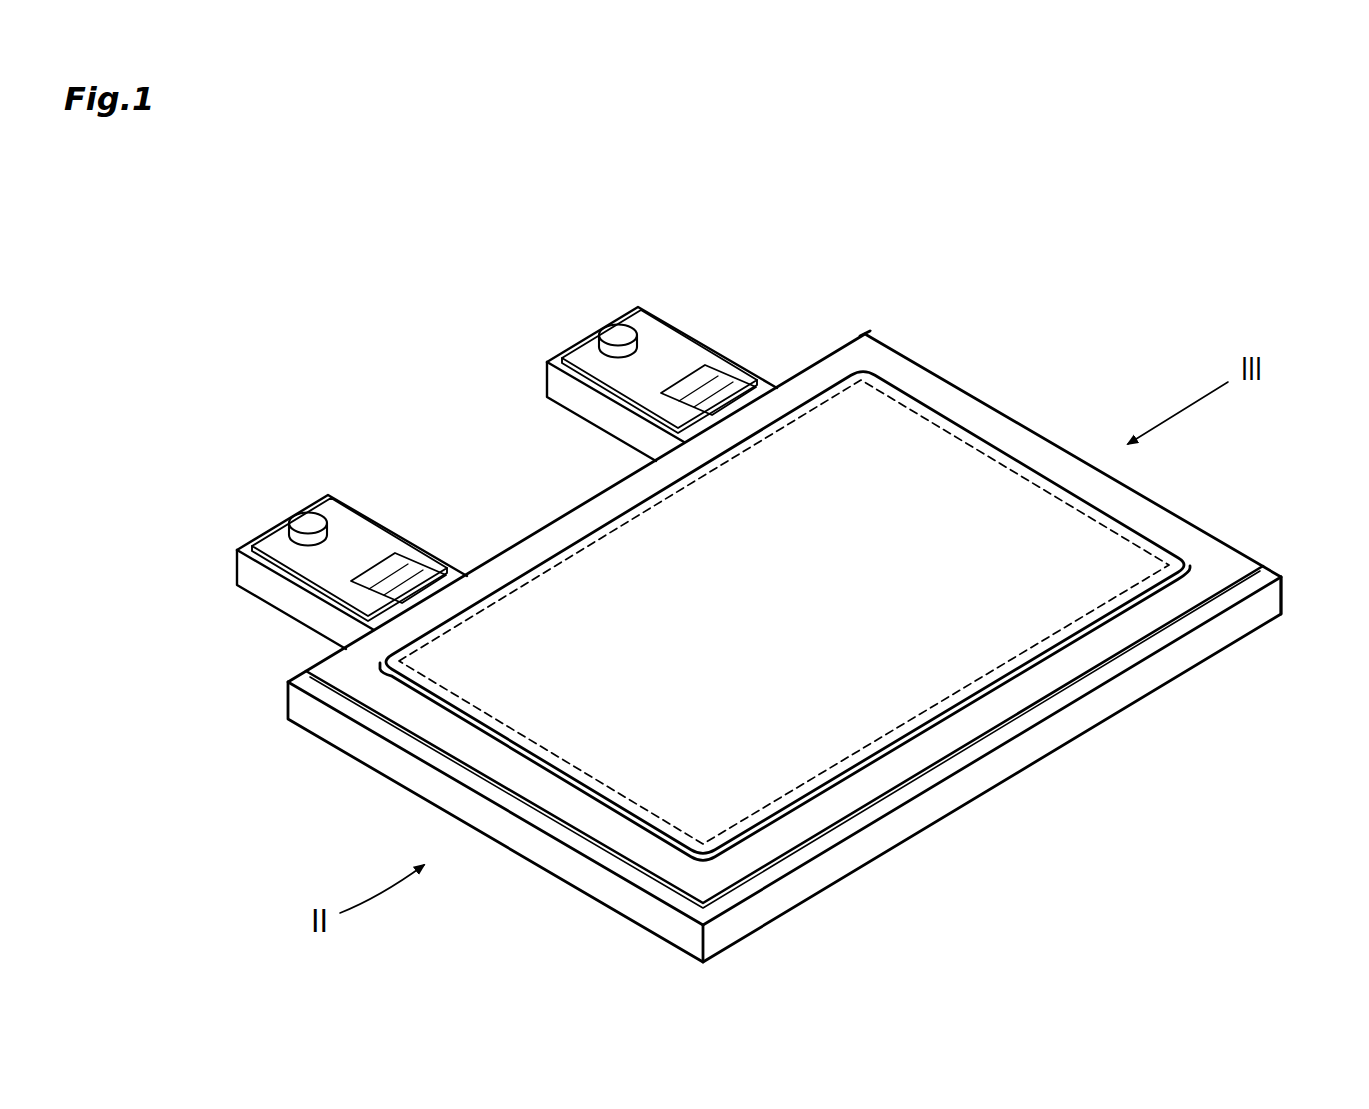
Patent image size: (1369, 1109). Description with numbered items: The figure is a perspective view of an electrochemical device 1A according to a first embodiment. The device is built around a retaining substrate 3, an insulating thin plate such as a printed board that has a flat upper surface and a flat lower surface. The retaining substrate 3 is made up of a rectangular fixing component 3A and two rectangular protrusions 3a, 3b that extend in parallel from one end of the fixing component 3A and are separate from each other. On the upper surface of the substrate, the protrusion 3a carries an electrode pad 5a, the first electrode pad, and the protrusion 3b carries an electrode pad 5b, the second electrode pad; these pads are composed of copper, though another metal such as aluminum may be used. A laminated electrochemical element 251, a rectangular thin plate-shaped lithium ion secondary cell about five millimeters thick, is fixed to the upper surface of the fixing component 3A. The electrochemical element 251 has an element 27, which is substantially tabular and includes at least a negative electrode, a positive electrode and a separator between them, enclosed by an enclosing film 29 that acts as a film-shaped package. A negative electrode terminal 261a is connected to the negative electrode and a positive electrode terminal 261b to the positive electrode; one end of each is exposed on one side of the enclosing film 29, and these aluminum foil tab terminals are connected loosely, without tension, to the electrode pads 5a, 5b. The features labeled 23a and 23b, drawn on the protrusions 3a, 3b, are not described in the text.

The electrochemical device 1A is at (898, 308).
The retaining substrate 3 is at (606, 486).
The fixing component 3A is at (1268, 580).
The protrusion 3a is at (336, 490).
The protrusion 3b is at (603, 312).
The electrode pad 5a is at (272, 548).
The electrode pad 5b is at (665, 337).
The first terminal 23a is at (303, 520).
The second terminal 23b is at (606, 332).
The laminated electrochemical element 251 is at (920, 386).
The negative electrode terminal 261a is at (365, 582).
The positive electrode terminal 261b is at (730, 402).
The element 27 is at (987, 447).
The enclosing film 29 is at (1065, 477).